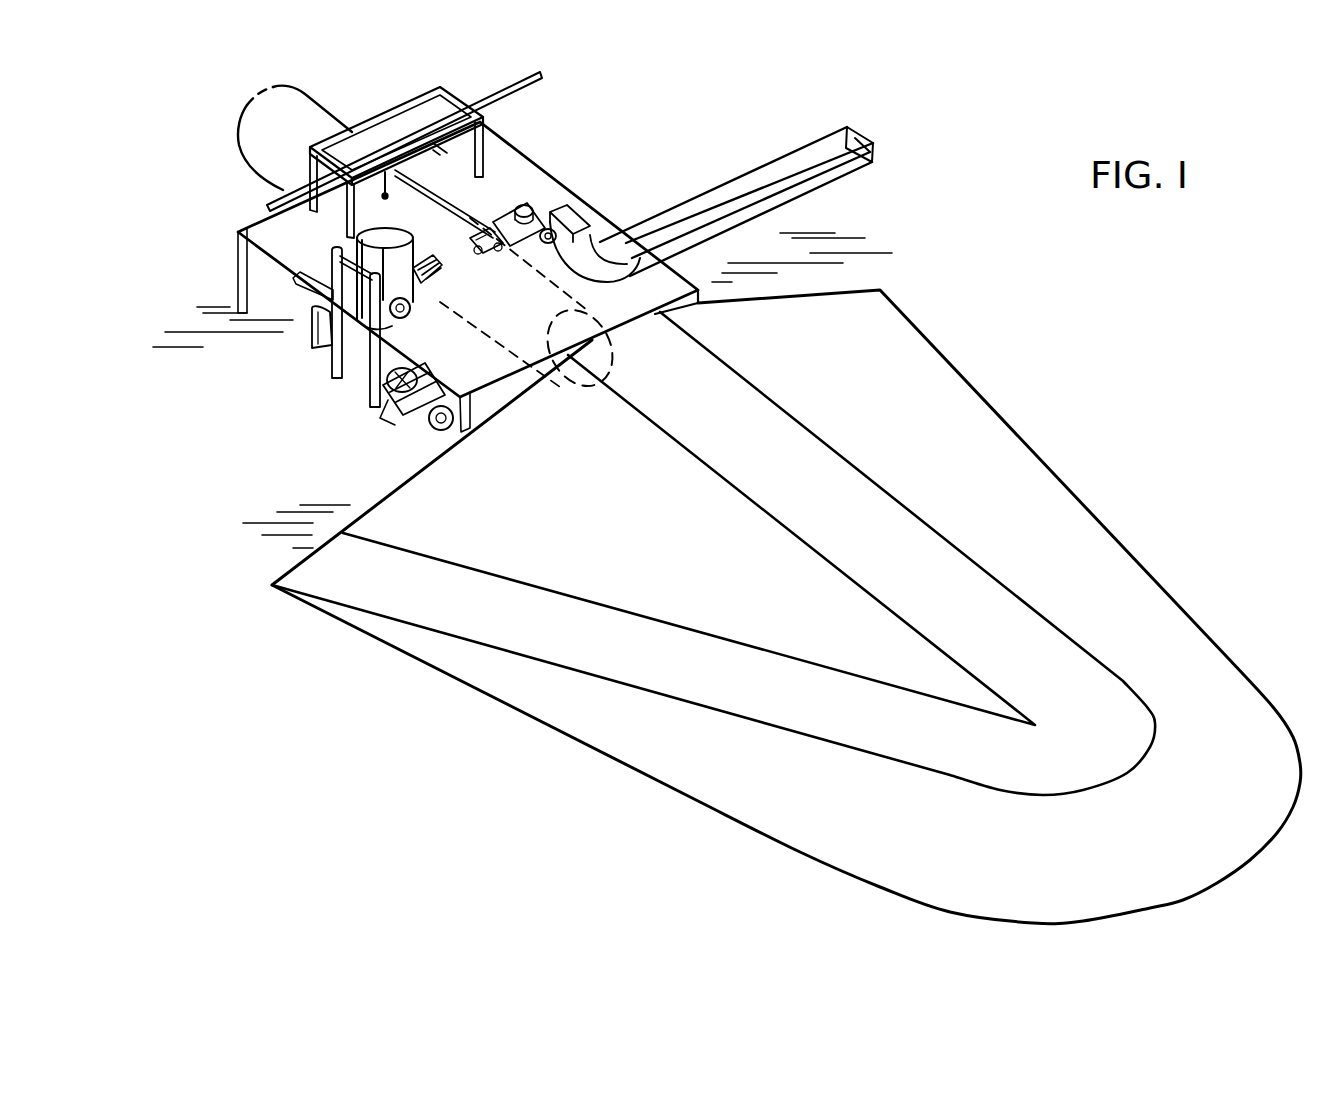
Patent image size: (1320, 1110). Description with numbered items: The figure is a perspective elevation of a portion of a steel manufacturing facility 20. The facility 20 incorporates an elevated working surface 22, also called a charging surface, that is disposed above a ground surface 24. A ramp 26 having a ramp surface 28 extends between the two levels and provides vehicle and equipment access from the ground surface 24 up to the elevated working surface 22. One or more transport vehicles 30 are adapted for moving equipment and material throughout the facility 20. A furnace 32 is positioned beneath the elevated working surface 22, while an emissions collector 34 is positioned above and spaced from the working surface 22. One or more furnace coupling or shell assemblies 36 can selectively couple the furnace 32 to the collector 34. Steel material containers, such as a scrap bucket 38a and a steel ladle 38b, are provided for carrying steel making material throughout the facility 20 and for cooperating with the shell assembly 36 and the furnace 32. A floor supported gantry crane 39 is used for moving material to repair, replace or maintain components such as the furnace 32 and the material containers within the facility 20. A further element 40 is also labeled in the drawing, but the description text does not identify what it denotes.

The steel manufacturing facility 20 is at (915, 196).
The elevated working surface 22 is at (507, 178).
The ground surface 24 is at (275, 433).
The ramp 26 is at (988, 437).
The ramp surface 28 is at (760, 410).
The transport vehicle 30 is at (458, 243).
The furnace 32 is at (362, 326).
The emissions collector 34 is at (300, 135).
The shell assembly 36 is at (365, 294).
The scrap bucket 38a is at (532, 210).
The steel ladle 38b is at (372, 403).
The gantry crane 39 is at (458, 91).
The carriage 40 is at (468, 258).